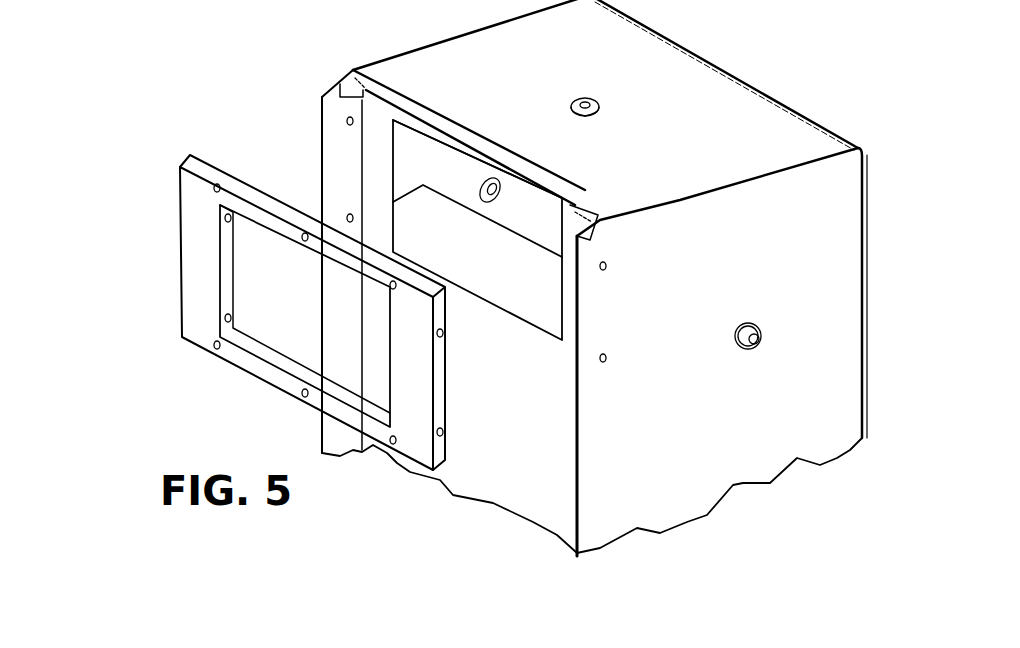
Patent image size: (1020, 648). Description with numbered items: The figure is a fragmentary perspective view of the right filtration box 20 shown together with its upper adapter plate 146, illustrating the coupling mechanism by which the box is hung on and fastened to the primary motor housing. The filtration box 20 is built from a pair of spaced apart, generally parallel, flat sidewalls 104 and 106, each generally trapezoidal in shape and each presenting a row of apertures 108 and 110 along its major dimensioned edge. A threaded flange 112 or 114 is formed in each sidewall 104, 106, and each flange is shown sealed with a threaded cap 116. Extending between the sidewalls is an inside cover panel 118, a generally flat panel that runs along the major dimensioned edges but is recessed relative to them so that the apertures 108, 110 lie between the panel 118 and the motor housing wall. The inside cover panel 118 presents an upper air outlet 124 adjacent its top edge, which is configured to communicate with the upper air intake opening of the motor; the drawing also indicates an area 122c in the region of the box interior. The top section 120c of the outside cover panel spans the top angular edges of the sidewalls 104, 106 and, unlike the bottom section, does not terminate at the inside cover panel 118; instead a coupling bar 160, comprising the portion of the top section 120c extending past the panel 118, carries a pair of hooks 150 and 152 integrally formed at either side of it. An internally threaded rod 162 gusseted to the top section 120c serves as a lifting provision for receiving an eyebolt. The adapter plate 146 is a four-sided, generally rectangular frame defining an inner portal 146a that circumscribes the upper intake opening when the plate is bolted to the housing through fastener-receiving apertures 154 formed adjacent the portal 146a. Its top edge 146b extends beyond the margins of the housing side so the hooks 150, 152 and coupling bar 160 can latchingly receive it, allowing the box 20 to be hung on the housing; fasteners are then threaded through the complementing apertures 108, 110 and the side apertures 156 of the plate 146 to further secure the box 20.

The filtration box 20 is at (557, 282).
The sidewall 104 is at (752, 453).
The sidewall 106 is at (345, 322).
The apertures 108 is at (606, 268).
The apertures 110 is at (347, 119).
The threaded flange 112 is at (760, 322).
The threaded flange 114 is at (478, 183).
The threaded cap 116 is at (762, 350).
The inside cover panel 118 is at (492, 455).
The top section 120c is at (723, 103).
The access opening 122c is at (474, 278).
The upper air outlet 124 is at (423, 185).
The adapter plate 146 is at (299, 282).
The inner portal 146a is at (305, 358).
The top edge 146b is at (202, 165).
The hook 150 is at (578, 205).
The hook 152 is at (352, 68).
The fastener-receiving apertures 154 is at (300, 396).
The fastener-receiving apertures 156 is at (443, 336).
The coupling bar 160 is at (470, 140).
The internally threaded rod 162 is at (597, 100).